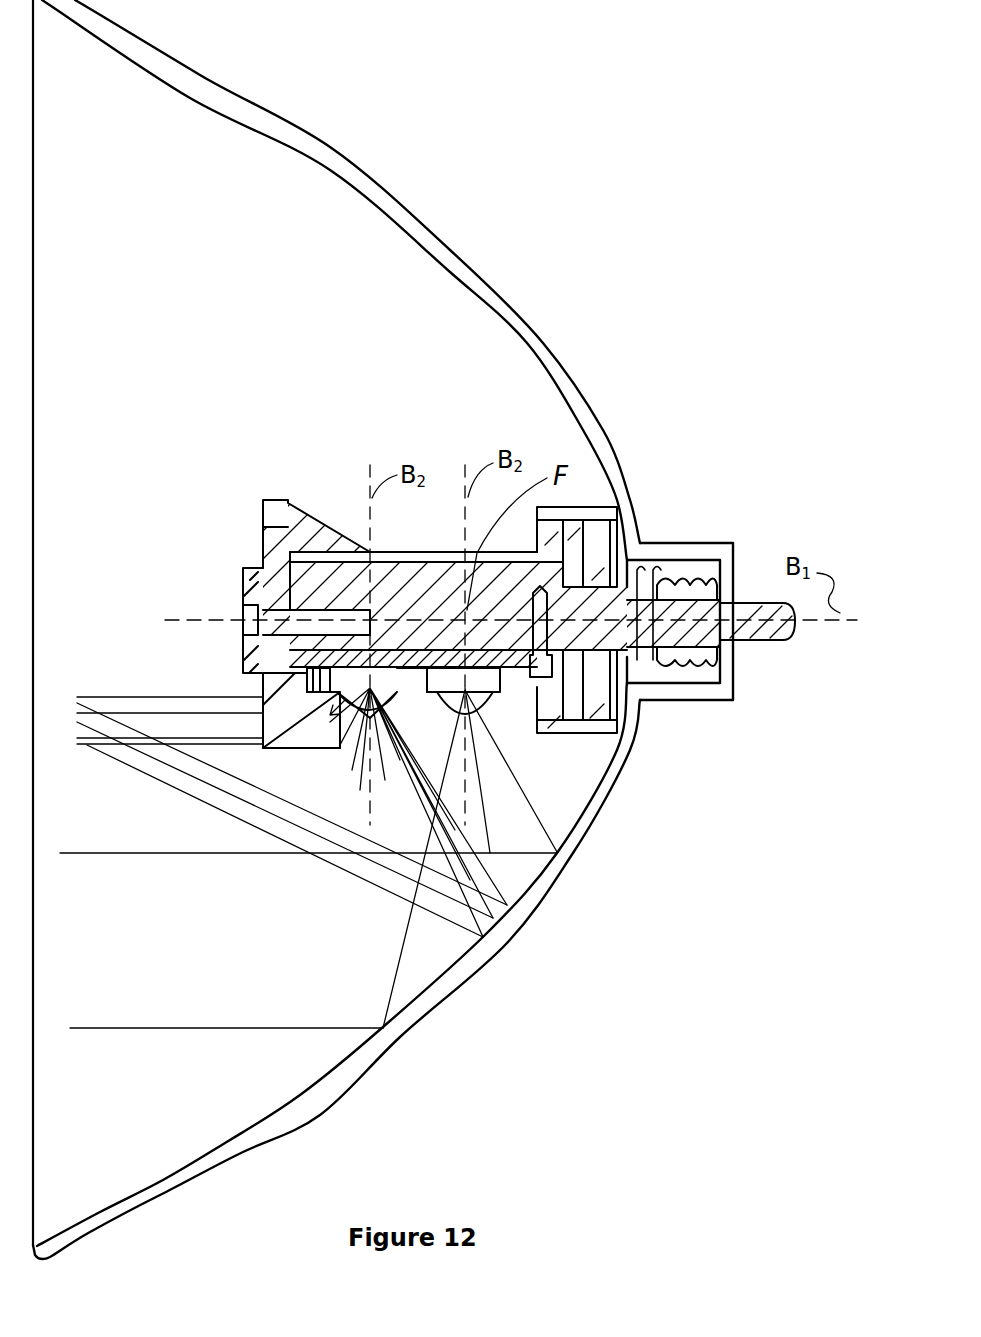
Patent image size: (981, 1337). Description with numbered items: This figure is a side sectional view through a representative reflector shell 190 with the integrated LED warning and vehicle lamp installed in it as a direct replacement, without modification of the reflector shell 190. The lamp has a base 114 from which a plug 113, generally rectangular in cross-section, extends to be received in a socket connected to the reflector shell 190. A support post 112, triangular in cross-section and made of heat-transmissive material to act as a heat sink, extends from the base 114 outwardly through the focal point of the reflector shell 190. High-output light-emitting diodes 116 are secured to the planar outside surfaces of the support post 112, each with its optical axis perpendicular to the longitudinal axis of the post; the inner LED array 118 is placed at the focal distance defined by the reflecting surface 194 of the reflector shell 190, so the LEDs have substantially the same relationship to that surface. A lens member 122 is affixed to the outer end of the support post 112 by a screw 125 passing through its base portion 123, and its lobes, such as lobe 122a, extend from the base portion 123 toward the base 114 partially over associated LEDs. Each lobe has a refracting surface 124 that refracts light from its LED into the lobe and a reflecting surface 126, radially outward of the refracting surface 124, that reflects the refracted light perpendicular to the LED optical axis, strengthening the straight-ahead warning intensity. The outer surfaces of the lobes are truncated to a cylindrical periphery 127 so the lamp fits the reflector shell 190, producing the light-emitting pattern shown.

The support post 112 is at (430, 548).
The plug 113 is at (760, 628).
The base 114 is at (567, 510).
The light-emitting diodes 116 is at (526, 692).
The inner LED array 118 is at (500, 705).
The lens member 122 is at (309, 498).
The lobe 122a is at (270, 750).
The base portion 123 is at (280, 690).
The refracting surface 124 is at (350, 745).
The screw 125 is at (243, 600).
The reflecting surface 126 is at (355, 748).
The cylindrical periphery 127 is at (262, 737).
The reflector shell 190 is at (363, 1053).
The reflecting surface 194 is at (270, 1110).